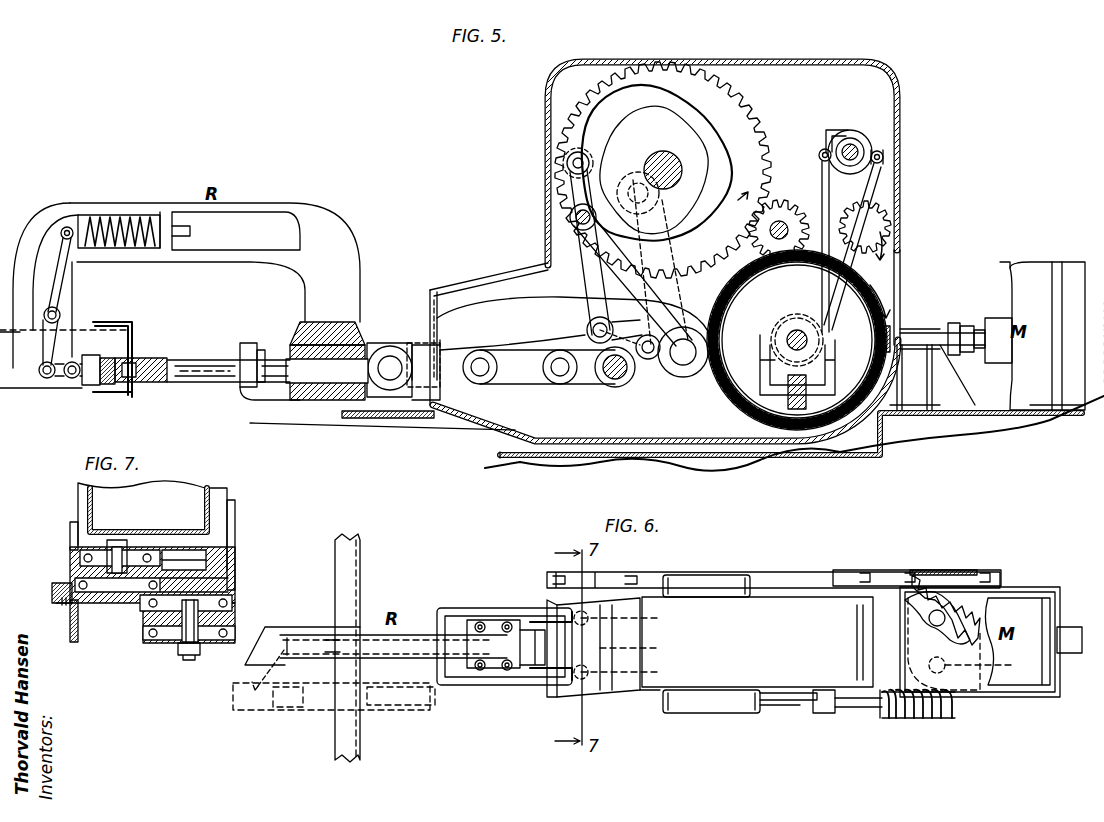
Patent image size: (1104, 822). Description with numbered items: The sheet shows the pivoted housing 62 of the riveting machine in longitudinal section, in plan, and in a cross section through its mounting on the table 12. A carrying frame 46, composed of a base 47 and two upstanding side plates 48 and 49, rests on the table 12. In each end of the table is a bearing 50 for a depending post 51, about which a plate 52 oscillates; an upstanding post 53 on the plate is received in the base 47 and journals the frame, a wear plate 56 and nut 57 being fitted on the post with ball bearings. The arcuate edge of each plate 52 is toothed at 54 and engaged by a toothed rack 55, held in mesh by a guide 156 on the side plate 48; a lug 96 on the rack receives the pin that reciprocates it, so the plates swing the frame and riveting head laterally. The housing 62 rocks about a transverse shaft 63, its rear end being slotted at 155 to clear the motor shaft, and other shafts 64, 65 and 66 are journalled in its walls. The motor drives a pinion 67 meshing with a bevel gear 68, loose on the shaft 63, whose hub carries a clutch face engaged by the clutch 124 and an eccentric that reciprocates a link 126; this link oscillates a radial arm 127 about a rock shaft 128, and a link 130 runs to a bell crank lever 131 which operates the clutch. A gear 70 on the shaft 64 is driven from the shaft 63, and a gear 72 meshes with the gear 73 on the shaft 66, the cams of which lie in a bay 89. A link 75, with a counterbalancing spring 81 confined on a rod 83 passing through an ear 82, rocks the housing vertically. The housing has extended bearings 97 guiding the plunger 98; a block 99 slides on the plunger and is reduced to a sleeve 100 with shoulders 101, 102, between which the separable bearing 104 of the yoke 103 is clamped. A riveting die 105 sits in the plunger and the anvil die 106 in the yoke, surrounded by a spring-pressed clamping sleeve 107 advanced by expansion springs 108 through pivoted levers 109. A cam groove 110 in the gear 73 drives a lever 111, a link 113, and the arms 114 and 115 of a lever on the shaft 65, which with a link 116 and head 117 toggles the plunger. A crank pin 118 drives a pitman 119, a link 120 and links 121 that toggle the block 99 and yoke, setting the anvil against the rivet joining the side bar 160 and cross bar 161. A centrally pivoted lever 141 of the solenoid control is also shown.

In FIG. 7, the table 12 is at (72, 640).
In FIG. 5, the carrying frame 46 is at (794, 433).
In FIG. 7, the carrying frame 46 is at (236, 572).
In FIG. 5, the base 47 is at (500, 455).
In FIG. 7, the base 47 is at (200, 572).
In FIG. 7, the side plate 48 is at (70, 535).
In FIG. 7, the side plate 49 is at (235, 520).
In FIG. 7, the bearing 50 is at (200, 622).
In FIG. 7, the depending post 51 is at (186, 630).
In FIG. 6, the depending post 51 is at (806, 667).
In FIG. 7, the plate 52 is at (236, 590).
In FIG. 6, the plate 52 is at (908, 650).
In FIG. 7, the post 53 is at (140, 575).
In FIG. 6, the post 53 is at (936, 626).
In FIG. 6, the toothed portion 54 is at (912, 590).
In FIG. 7, the toothed rack 55 is at (64, 605).
In FIG. 6, the toothed rack 55 is at (975, 578).
In FIG. 7, the wear plate 56 is at (148, 643).
In FIG. 7, the nut 57 is at (190, 660).
In FIG. 5, the housing 62 is at (672, 243).
In FIG. 7, the housing 62 is at (152, 525).
In FIG. 6, the housing 62 is at (814, 634).
In FIG. 5, the transverse shaft 63 is at (797, 328).
In FIG. 5, the transverse shaft 64 is at (782, 220).
In FIG. 5, the fixed shaft 65 is at (615, 380).
In FIG. 5, the transverse shaft 66 is at (665, 152).
In FIG. 5, the pinion 67 is at (874, 338).
In FIG. 5, the bevel gear 68 is at (724, 394).
In FIG. 5, the gear 70 is at (778, 160).
In FIG. 5, the gear 72 is at (790, 222).
In FIG. 5, the gear 73 is at (745, 118).
In FIG. 6, the link 75 is at (790, 702).
In FIG. 6, the counterbalancing expansion spring 81 is at (925, 720).
In FIG. 6, the ear 82 is at (880, 715).
In FIG. 6, the rod 83 is at (830, 713).
In FIG. 6, the bay 89 is at (725, 578).
In FIG. 6, the lug 96 is at (805, 572).
In FIG. 5, the extended bearings 97 is at (249, 343).
In FIG. 6, the extended bearings 97 is at (470, 610).
In FIG. 5, the plunger 98 is at (222, 382).
In FIG. 5, the block 99 is at (395, 346).
In FIG. 5, the sleeve 100 is at (330, 412).
In FIG. 5, the shoulder 101 is at (292, 340).
In FIG. 5, the shoulder 102 is at (371, 343).
In FIG. 5, the yoke 103 is at (180, 285).
In FIG. 6, the separable bearing 104 is at (492, 668).
In FIG. 5, the riveting die 105 is at (140, 358).
In FIG. 5, the riveting die 106 is at (115, 386).
In FIG. 5, the spring-pressed clamping sleeve 107 is at (88, 388).
In FIG. 5, the expansion springs 108 is at (100, 217).
In FIG. 5, the pivoted levers 109 is at (55, 292).
In FIG. 5, the cam groove 110 is at (716, 180).
In FIG. 5, the lever 111 is at (580, 183).
In FIG. 5, the link 113 is at (612, 326).
In FIG. 5, the arm 114 is at (648, 360).
In FIG. 5, the arm 115 is at (592, 382).
In FIG. 5, the link 116 is at (546, 380).
In FIG. 5, the head 117 is at (482, 385).
In FIG. 5, the crank pin 118 is at (631, 180).
In FIG. 5, the pitman 119 is at (692, 266).
In FIG. 5, the link 120 is at (668, 372).
In FIG. 5, the links 121 is at (574, 323).
In FIG. 5, the clutch 124 is at (782, 327).
In FIG. 5, the link 126 is at (882, 183).
In FIG. 5, the radial arm 127 is at (877, 150).
In FIG. 5, the rock shaft 128 is at (852, 138).
In FIG. 5, the link 130 is at (829, 298).
In FIG. 5, the bell crank lever 131 is at (760, 362).
In FIG. 5, the centrally pivoted lever 141 is at (832, 130).
In FIG. 5, the slot 155 is at (900, 272).
In FIG. 7, the guide 156 is at (55, 586).
In FIG. 6, the guide 156 is at (935, 570).
In FIG. 5, the side bar 160 is at (112, 322).
In FIG. 6, the side bar 160 is at (352, 590).
In FIG. 5, the cross bar 161 is at (30, 390).
In FIG. 6, the cross bar 161 is at (298, 627).